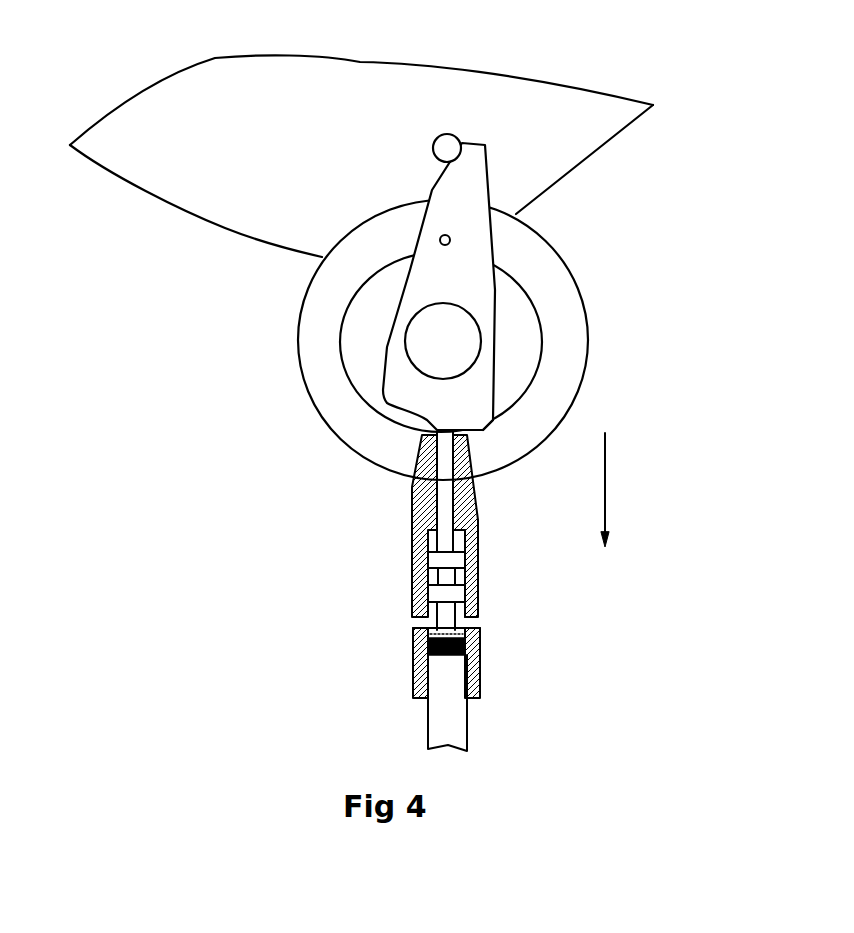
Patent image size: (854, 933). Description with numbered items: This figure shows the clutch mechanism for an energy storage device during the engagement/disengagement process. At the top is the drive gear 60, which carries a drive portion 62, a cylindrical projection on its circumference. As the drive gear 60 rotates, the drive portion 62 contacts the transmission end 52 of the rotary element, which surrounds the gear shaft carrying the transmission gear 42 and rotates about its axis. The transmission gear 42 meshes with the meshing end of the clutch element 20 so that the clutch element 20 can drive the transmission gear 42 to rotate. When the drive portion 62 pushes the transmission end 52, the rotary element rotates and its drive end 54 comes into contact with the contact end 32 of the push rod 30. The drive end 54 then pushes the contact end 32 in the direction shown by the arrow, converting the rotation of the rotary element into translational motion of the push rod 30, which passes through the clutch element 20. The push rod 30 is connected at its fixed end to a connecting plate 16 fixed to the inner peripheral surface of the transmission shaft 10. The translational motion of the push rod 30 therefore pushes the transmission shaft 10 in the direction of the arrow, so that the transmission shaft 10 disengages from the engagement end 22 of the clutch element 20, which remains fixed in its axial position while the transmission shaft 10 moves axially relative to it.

The drive gear 60 is at (353, 116).
The drive portion 62 is at (447, 148).
The transmission end 52 is at (468, 192).
The transmission gear 42 is at (322, 377).
The drive end 54 is at (472, 412).
The contact end 32 is at (440, 447).
The clutch element 20 is at (417, 495).
The push rod 30 is at (448, 538).
The engagement end 22 is at (480, 600).
The connecting plate 16 is at (465, 630).
The transmission shaft 10 is at (415, 665).